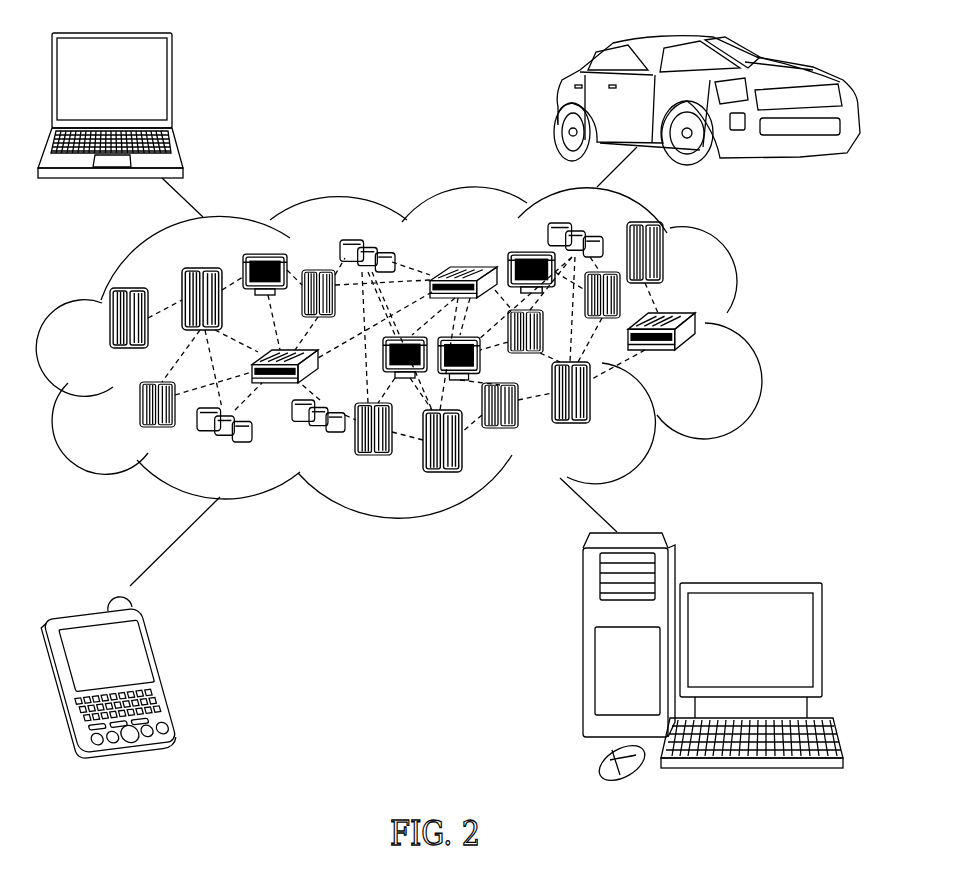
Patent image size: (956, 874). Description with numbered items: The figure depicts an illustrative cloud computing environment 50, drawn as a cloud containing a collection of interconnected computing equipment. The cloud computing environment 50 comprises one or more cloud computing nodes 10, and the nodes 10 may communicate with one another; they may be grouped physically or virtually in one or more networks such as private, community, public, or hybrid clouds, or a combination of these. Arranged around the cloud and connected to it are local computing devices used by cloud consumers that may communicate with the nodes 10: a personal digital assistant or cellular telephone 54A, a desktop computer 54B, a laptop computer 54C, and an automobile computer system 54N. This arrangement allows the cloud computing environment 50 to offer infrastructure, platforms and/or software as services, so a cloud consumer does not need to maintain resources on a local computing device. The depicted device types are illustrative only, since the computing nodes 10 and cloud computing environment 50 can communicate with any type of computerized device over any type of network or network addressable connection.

The cloud computing environment 50 is at (750, 327).
The cloud computing node 10 is at (703, 356).
The personal digital assistant or cellular telephone 54A is at (164, 669).
The desktop computer 54B is at (748, 582).
The laptop computer 54C is at (173, 86).
The automobile computer system 54N is at (557, 100).